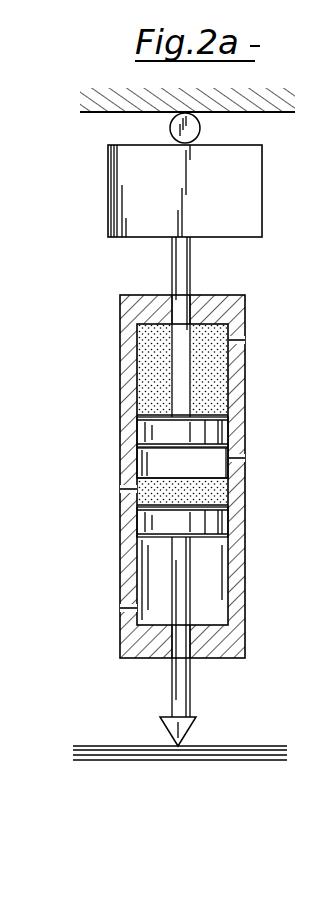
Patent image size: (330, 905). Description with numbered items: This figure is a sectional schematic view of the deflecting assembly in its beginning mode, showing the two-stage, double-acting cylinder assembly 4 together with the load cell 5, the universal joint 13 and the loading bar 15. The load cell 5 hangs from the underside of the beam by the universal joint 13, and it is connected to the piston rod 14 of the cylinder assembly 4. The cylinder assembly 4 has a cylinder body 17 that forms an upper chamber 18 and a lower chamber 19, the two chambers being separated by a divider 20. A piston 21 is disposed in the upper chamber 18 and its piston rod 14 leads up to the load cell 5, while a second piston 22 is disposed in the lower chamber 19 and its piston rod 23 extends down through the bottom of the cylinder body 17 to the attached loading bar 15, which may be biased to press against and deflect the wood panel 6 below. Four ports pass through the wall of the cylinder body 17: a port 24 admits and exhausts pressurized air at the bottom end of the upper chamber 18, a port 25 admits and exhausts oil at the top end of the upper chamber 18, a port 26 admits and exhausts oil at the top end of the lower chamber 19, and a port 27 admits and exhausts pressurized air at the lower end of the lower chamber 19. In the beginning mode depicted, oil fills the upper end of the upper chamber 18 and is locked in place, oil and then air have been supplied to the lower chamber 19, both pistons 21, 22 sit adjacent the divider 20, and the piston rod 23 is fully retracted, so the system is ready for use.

The two-stage cylinder assembly 4 is at (252, 478).
The load cell 5 is at (265, 192).
The wood panel 6 is at (127, 746).
The universal joint 13 is at (199, 128).
The piston rod 14 is at (192, 270).
The loading bar 15 is at (195, 730).
The cylinder body 17 is at (240, 400).
The upper chamber 18 is at (210, 368).
The lower chamber 19 is at (215, 560).
The divider 20 is at (158, 476).
The piston 21 is at (150, 432).
The second piston 22 is at (150, 525).
The piston rod 23 is at (192, 688).
The port 24 is at (246, 458).
The port 25 is at (248, 340).
The port 26 is at (118, 490).
The port 27 is at (130, 608).